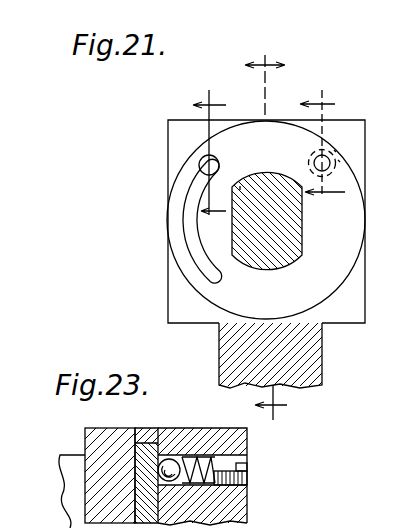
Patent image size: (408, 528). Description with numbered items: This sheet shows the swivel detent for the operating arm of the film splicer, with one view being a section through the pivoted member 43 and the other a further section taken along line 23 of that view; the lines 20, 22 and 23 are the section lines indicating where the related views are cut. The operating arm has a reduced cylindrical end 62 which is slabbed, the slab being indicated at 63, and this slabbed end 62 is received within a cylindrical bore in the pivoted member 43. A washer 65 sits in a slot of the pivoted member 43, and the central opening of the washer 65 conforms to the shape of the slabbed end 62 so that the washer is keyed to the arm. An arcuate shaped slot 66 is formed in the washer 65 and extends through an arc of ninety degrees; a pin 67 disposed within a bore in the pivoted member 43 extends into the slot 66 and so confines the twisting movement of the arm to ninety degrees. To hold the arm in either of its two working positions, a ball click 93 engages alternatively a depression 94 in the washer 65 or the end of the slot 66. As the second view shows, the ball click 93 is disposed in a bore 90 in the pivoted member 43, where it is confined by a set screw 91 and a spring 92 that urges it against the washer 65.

In FIG. 21, the section line 20- 20 is at (280, 230).
In FIG. 21, the section line 22- 22 is at (208, 158).
In FIG. 21, the section line 23- 23 is at (322, 146).
In FIG. 21, the pivoted member 43 is at (347, 313).
In FIG. 23, the pivoted member 43 is at (237, 508).
In FIG. 21, the reduced cylindrical end 62 is at (284, 261).
In FIG. 21, the slab 63 is at (301, 237).
In FIG. 21, the washer 65 is at (354, 176).
In FIG. 23, the washer 65 is at (144, 443).
In FIG. 21, the arcuate shaped slot 66 is at (193, 263).
In FIG. 21, the pin 67 is at (199, 164).
In FIG. 23, the bore 90 is at (247, 442).
In FIG. 23, the set screw 91 is at (237, 461).
In FIG. 23, the spring 92 is at (248, 484).
In FIG. 21, the ball click 93 is at (334, 150).
In FIG. 23, the ball click 93 is at (189, 428).
In FIG. 21, the depression 94 is at (338, 160).
In FIG. 23, the depression 94 is at (140, 468).